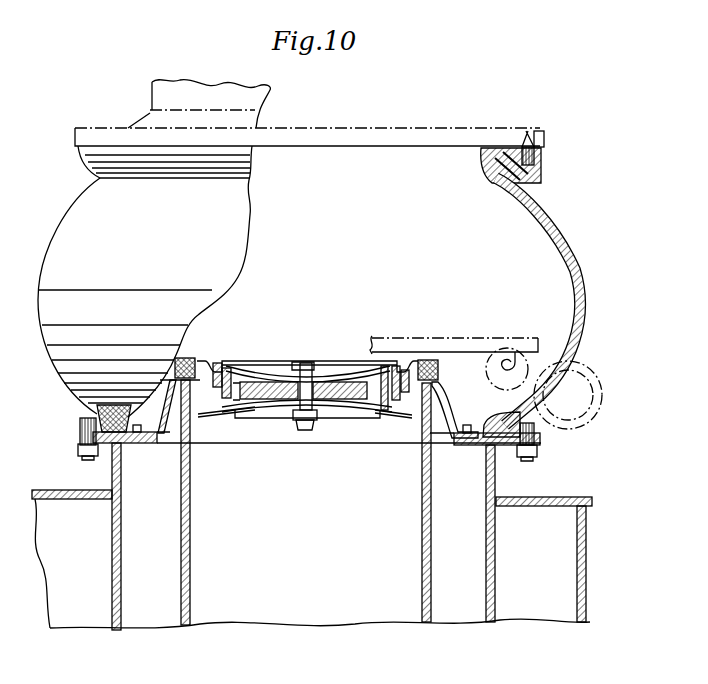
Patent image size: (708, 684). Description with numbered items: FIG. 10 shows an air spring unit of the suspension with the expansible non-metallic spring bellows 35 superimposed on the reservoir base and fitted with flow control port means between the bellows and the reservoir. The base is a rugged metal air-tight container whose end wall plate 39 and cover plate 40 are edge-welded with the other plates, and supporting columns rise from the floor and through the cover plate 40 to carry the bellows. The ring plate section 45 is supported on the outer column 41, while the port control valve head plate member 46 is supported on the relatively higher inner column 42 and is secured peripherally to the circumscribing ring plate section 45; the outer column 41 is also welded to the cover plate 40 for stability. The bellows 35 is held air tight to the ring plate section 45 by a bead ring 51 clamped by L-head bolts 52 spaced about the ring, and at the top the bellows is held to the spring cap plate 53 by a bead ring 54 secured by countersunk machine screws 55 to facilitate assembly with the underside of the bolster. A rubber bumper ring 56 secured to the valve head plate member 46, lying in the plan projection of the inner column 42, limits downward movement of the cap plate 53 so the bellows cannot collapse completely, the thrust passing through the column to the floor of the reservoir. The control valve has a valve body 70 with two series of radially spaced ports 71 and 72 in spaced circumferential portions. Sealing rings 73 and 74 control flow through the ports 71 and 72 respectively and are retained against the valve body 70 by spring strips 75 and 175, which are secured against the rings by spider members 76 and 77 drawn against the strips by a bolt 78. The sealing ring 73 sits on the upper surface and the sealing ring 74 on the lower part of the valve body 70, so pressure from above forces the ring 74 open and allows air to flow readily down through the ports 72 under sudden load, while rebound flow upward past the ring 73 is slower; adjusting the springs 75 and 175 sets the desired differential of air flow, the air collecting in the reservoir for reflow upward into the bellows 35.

The spring bellows portion 35 is at (583, 288).
The end wall plate 39 is at (586, 553).
The cover plate 40 is at (556, 497).
The outer column 41 is at (116, 543).
The inner column 42 is at (190, 527).
The ring plate section 45 is at (463, 450).
The port control valve head plate member 46 is at (450, 392).
The bead ring 51 is at (98, 418).
The L-head bolt 52 is at (84, 455).
The spring cap plate 53 is at (548, 134).
The bead ring 54 is at (531, 177).
The machine screw 55 is at (528, 132).
The rubber bumper ring 56 is at (185, 357).
The valve body 70 is at (345, 385).
The valve ports 71 is at (247, 383).
The valve ports 72 is at (226, 368).
The sealing ring 73 is at (392, 362).
The sealing ring 74 is at (248, 411).
The spring strip 75 is at (275, 370).
The spider member 76 is at (302, 360).
The spider member 77 is at (336, 415).
The bolt 78 is at (314, 362).
The spring strip 175 is at (275, 416).